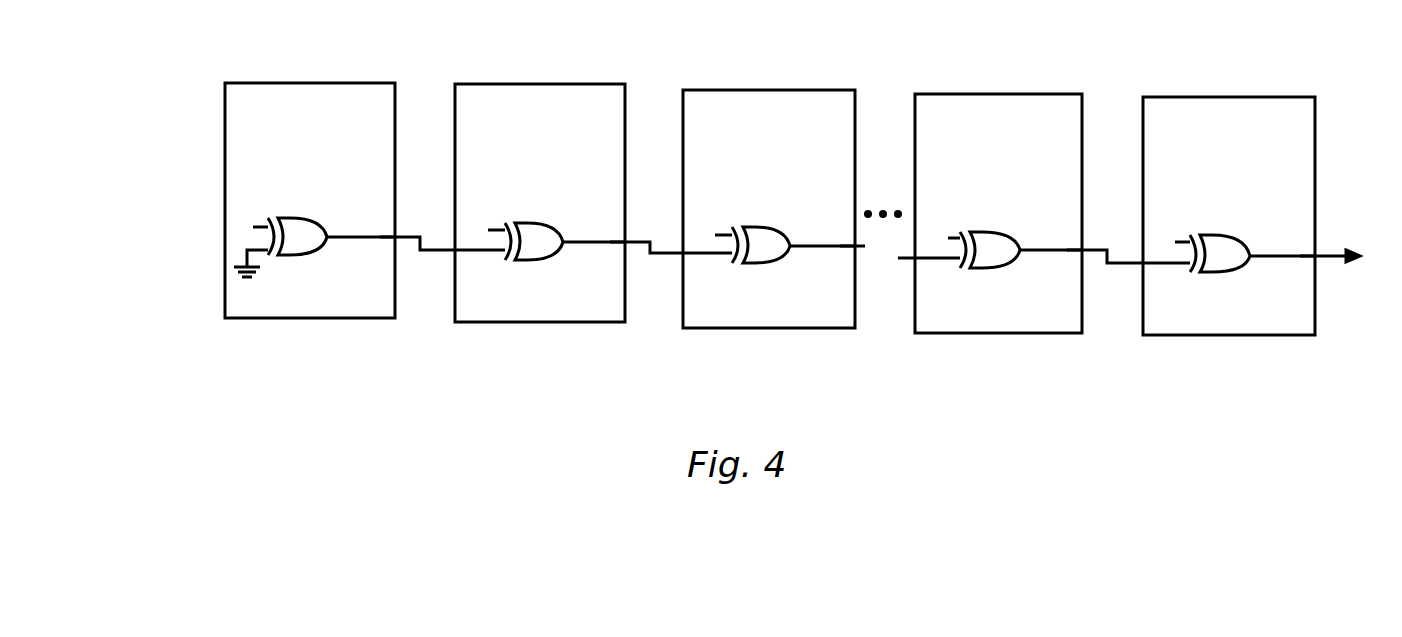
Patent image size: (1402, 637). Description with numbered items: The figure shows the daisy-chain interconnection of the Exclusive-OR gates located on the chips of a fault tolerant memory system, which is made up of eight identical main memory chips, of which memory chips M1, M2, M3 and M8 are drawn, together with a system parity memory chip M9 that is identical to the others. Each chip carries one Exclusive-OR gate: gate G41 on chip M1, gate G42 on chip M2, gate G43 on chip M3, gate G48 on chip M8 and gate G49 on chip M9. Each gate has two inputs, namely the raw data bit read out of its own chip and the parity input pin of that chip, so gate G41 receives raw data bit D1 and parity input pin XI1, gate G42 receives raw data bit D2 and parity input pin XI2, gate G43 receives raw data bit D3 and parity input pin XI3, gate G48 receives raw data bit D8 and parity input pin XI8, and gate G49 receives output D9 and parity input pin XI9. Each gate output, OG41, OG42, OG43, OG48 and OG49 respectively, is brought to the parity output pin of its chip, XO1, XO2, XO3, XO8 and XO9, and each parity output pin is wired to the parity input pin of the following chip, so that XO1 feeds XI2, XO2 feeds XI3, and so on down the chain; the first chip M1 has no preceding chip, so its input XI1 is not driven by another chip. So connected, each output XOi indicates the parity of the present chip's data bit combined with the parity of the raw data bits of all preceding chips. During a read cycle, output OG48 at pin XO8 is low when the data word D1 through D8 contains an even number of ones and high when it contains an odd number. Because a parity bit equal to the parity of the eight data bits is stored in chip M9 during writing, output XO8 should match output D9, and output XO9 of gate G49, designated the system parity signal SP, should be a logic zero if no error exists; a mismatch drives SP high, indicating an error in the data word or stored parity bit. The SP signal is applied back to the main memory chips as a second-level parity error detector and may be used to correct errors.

The memory chip M1 is at (310, 200).
The memory chip M2 is at (540, 203).
The memory chip M3 is at (769, 209).
The memory chip M8 is at (998, 213).
The system parity memory chip M9 is at (1229, 216).
The Exclusive-OR gate G41 is at (289, 224).
The Exclusive-OR gate G42 is at (529, 229).
The Exclusive-OR gate G43 is at (757, 233).
The Exclusive-OR gate G48 is at (984, 238).
The Exclusive-OR gate G49 is at (1216, 242).
The raw data bit D1 is at (247, 227).
The raw data bit D2 is at (482, 230).
The raw data bit D3 is at (711, 235).
The raw data bit D8 is at (939, 238).
The stored parity bit output D9 is at (1168, 242).
The gate output OG41 is at (382, 233).
The gate output OG42 is at (616, 237).
The gate output OG43 is at (827, 235).
The gate output OG48 is at (1071, 245).
The gate output OG49 is at (1282, 244).
The parity output pin XO1 is at (361, 250).
The parity output pin XO2 is at (595, 255).
The parity output pin XO3 is at (825, 260).
The parity output pin XO8 is at (1052, 264).
The parity output pin XO9 is at (1283, 269).
The parity input pin XI1 is at (259, 253).
The parity input pin XI2 is at (472, 271).
The parity input pin XI3 is at (701, 274).
The parity input pin XI8 is at (929, 279).
The parity input pin XI9 is at (1157, 283).
The system parity signal SP is at (1352, 257).